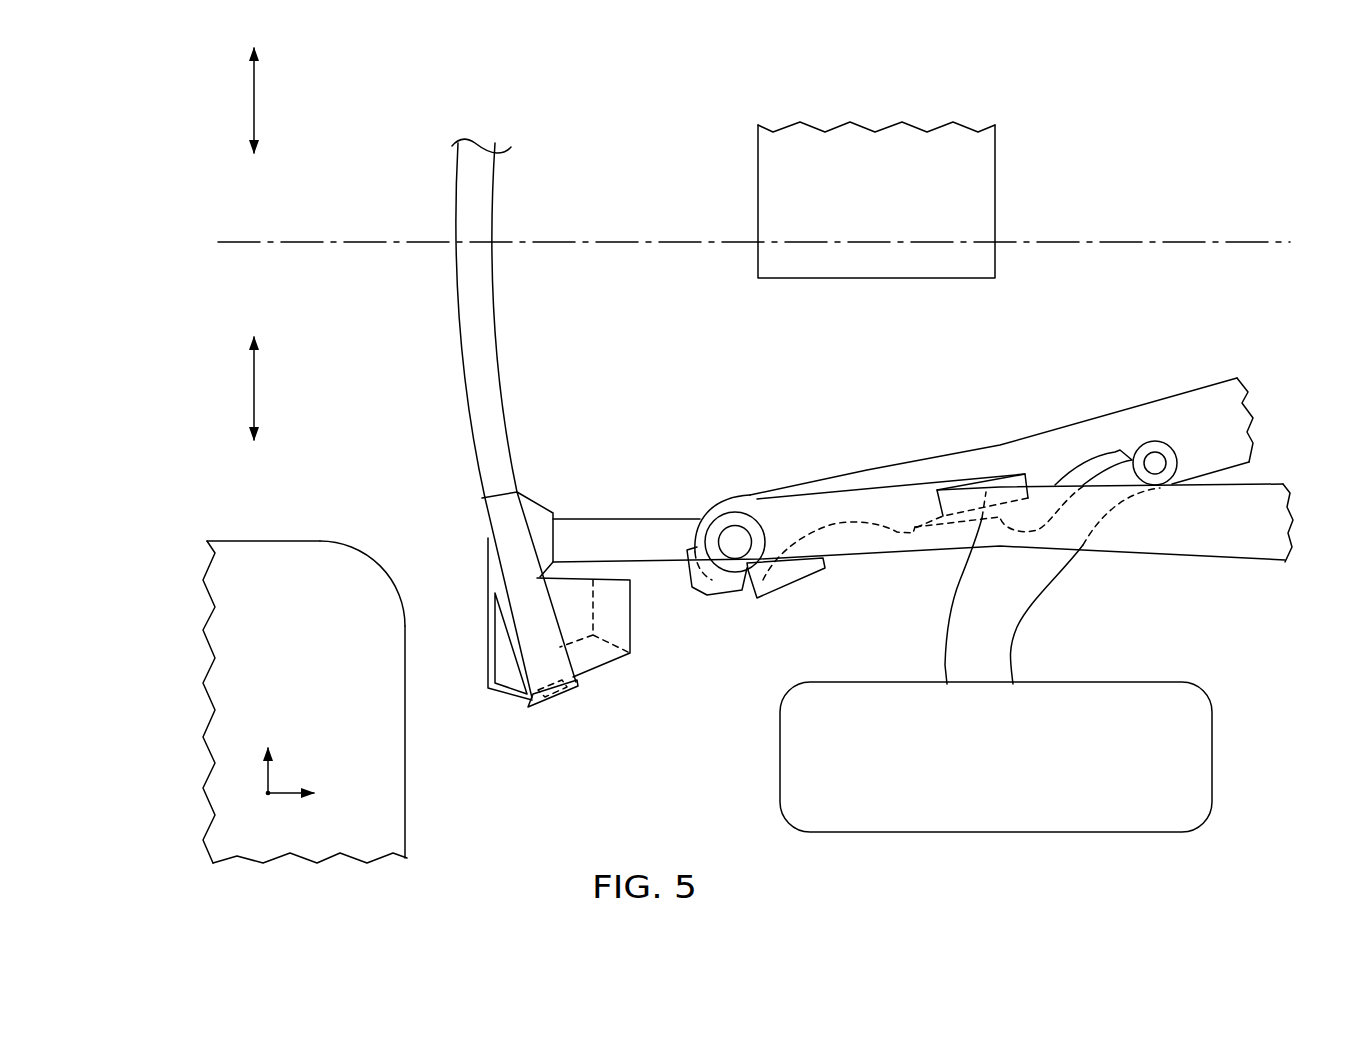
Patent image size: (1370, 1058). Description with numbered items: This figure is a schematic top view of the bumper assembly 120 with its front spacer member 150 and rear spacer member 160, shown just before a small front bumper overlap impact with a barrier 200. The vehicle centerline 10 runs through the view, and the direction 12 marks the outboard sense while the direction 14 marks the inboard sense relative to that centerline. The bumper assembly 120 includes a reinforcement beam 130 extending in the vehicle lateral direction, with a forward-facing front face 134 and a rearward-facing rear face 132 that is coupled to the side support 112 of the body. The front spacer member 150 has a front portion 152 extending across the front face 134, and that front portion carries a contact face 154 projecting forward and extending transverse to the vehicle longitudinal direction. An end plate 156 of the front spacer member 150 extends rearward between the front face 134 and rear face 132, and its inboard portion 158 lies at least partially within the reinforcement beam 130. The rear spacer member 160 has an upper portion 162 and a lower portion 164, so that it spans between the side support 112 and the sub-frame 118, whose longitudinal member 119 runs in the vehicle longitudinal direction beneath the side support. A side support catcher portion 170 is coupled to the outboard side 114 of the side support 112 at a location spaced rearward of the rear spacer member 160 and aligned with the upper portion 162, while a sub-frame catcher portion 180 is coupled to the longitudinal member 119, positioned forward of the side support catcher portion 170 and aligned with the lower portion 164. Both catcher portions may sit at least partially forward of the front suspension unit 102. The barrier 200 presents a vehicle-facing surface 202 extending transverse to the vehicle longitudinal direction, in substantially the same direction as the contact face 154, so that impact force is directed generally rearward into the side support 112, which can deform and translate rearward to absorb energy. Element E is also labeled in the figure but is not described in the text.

The vehicle centerline 10 is at (340, 243).
The direction 12 is at (254, 72).
The direction 14 is at (254, 124).
The front suspension unit 102 is at (1230, 788).
The side support 112 is at (730, 488).
The outboard side 114 is at (620, 563).
The sub-frame 118 is at (1021, 522).
The longitudinal member 119 is at (913, 534).
The bumper assembly 120 is at (447, 400).
The reinforcement beam 130 is at (447, 418).
The rear face 132 is at (510, 444).
The front face 134 is at (460, 358).
The front spacer member 150 is at (496, 645).
The front portion 152 is at (469, 534).
The contact face 154 is at (488, 624).
The end plate 156 is at (567, 739).
The inboard portion 158 is at (535, 702).
The rear spacer member 160 is at (615, 675).
The upper portion 162 is at (630, 649).
The lower portion 164 is at (595, 605).
The side support catcher portion 170 is at (813, 609).
The sub-frame catcher portion 180 is at (731, 617).
The barrier 200 is at (338, 645).
The vehicle-facing surface 202 is at (405, 664).
The eye point / occupant region E is at (995, 188).